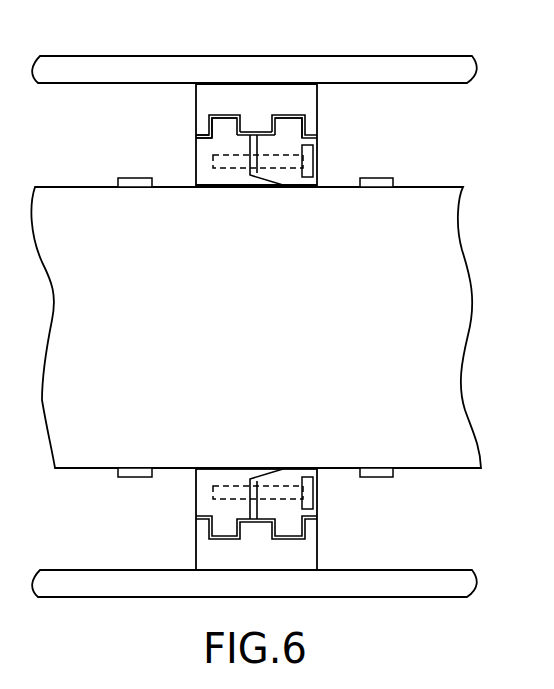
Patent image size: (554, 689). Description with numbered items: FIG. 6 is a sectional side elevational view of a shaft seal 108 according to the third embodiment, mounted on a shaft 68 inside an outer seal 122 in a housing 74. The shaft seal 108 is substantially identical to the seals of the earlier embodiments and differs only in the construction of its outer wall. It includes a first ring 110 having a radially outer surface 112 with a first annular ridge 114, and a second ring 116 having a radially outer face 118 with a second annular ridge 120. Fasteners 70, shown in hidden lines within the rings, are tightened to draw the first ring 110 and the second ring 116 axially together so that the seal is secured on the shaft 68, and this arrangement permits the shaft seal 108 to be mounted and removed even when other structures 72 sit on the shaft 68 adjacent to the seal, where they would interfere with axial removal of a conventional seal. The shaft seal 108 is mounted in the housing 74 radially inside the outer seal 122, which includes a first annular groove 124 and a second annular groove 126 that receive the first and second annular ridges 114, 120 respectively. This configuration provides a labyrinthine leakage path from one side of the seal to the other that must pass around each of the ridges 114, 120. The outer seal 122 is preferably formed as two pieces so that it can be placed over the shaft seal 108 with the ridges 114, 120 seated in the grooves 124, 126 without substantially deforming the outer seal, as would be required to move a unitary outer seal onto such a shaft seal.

The shaft 68 is at (455, 325).
The threaded fasteners 70 is at (317, 163).
The other structures 72 is at (393, 181).
The housing 74 is at (431, 64).
The shaft seal 108 is at (176, 526).
The first ring 110 is at (197, 173).
The radially outer surface 112 is at (197, 133).
The first annular ridge 114 is at (220, 125).
The second ring 116 is at (318, 183).
The radially outer face 118 is at (314, 135).
The second annular ridge 120 is at (293, 128).
The outer seal 122 is at (270, 90).
The first annular groove 124 is at (218, 123).
The second annular groove 126 is at (293, 125).